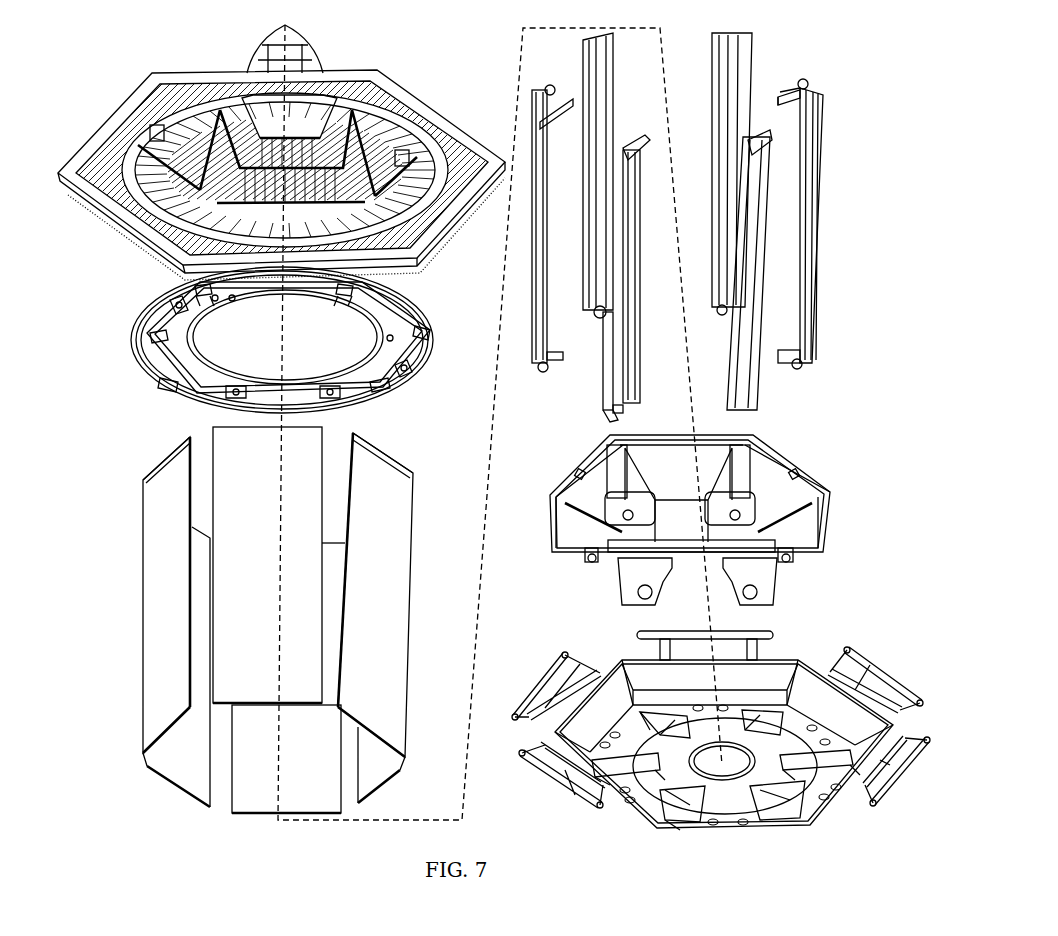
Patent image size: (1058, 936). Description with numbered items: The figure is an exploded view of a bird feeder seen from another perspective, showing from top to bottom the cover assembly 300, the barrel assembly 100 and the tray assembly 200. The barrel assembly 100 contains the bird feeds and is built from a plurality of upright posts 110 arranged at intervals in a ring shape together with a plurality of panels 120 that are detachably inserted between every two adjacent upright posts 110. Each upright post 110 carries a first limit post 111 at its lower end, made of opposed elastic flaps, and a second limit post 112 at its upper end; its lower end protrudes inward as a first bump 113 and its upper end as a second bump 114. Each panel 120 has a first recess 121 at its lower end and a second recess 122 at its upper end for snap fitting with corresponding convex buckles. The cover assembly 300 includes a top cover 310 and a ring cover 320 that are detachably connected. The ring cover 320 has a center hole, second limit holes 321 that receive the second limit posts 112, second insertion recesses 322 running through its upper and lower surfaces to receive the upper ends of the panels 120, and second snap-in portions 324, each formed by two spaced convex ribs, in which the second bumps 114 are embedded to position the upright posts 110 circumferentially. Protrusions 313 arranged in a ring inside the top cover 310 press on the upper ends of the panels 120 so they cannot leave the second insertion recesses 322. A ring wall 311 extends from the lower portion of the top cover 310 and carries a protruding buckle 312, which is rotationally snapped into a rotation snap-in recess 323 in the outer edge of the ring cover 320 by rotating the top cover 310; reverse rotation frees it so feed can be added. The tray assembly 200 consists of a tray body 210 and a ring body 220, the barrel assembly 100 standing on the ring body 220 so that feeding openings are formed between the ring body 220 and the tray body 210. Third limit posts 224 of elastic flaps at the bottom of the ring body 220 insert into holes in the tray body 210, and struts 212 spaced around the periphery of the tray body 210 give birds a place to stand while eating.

The barrel assembly 100 is at (130, 582).
The upright post 110 is at (545, 215).
The first limit post 111 is at (797, 372).
The second limit post 112 is at (548, 88).
The first bump 113 is at (560, 360).
The second bump 114 is at (570, 115).
The panel 120 is at (145, 525).
The first recess 121 is at (168, 727).
The second recess 122 is at (160, 460).
The tray assembly 200 is at (845, 606).
The tray body 210 is at (622, 662).
The strut 212 is at (550, 672).
The ring body 220 is at (800, 470).
The third limit post 224 is at (588, 568).
The cover assembly 300 is at (78, 222).
The top cover 310 is at (150, 73).
The ring wall 311 is at (175, 245).
The protruding buckle 312 is at (112, 233).
The protrusion 313 is at (150, 110).
The ring cover 320 is at (450, 278).
The second limit hole 321 is at (195, 290).
The second insertion recess 322 is at (175, 305).
The rotation snap-in recess 323 is at (155, 382).
The second snap-in portion 324 is at (232, 298).